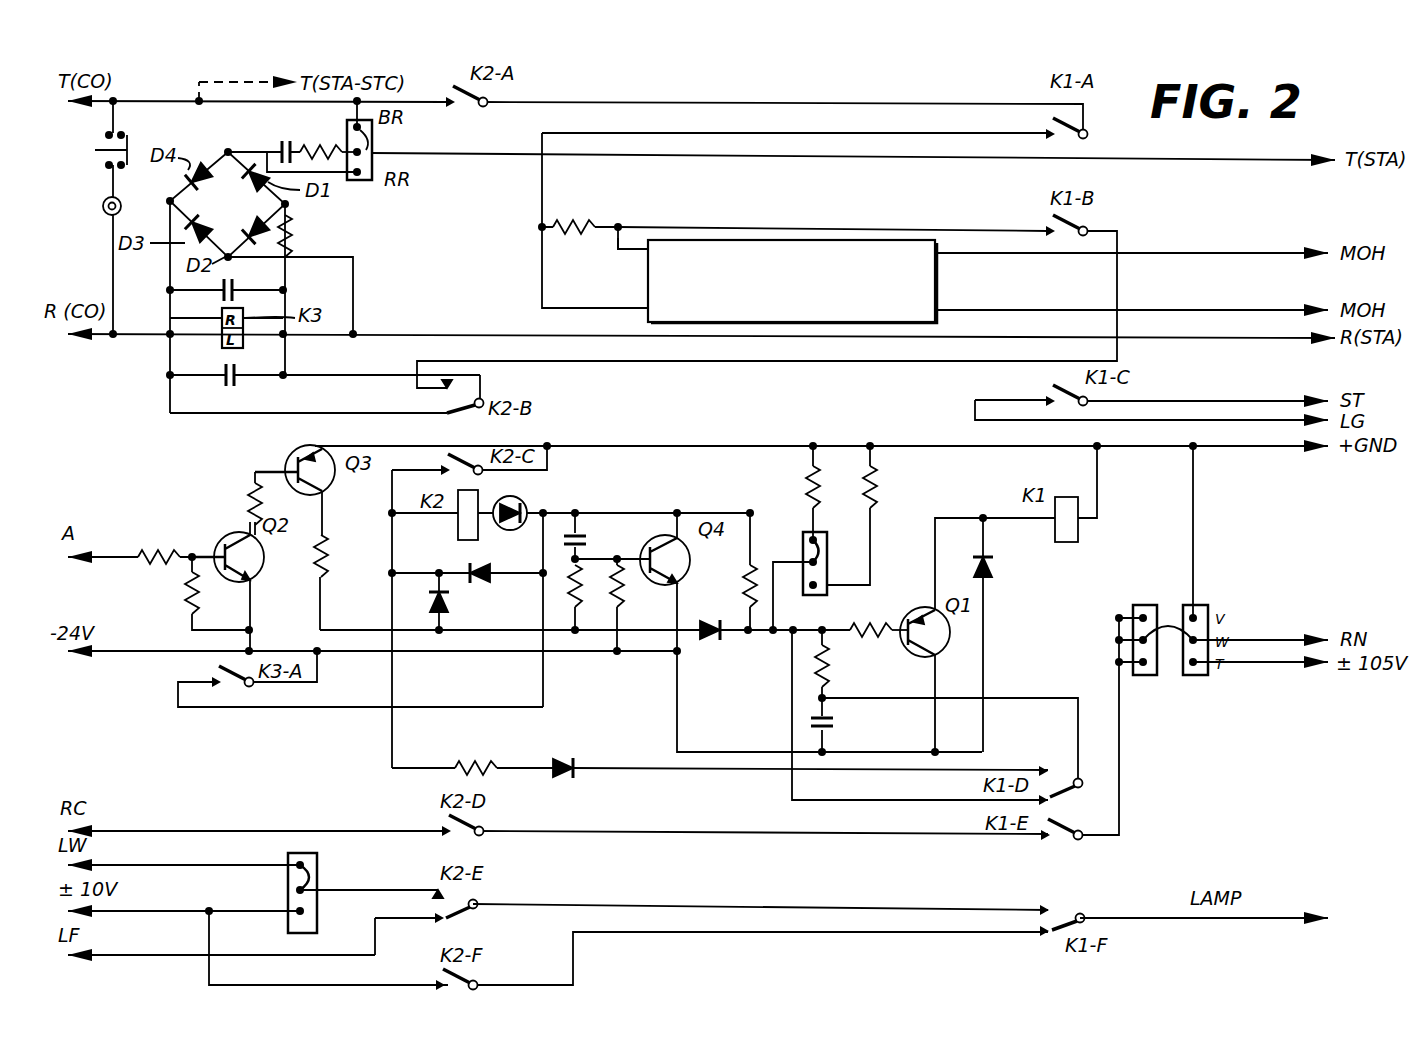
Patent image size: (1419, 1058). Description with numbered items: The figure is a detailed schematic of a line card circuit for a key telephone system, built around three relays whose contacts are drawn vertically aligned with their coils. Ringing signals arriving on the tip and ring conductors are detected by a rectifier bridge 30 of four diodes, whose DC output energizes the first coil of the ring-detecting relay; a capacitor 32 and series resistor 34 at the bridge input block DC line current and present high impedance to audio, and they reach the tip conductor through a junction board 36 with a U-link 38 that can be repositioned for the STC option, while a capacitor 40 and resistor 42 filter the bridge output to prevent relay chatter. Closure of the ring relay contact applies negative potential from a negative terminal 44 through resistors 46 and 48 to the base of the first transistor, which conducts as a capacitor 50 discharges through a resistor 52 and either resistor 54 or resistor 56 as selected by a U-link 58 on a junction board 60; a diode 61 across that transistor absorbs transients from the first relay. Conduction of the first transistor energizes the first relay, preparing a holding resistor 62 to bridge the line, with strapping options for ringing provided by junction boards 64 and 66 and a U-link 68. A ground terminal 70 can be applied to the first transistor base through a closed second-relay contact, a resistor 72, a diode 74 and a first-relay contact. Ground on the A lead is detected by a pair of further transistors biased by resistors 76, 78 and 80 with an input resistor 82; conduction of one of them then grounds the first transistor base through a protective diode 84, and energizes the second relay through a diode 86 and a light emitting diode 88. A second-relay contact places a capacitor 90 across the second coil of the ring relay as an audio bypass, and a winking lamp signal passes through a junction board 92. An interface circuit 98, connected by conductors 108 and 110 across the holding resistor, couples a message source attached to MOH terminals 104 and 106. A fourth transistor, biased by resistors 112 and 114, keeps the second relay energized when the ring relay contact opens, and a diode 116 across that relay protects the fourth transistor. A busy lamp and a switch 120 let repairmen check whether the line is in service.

The rectifier bridge 30 is at (227, 204).
The capacitor 32 is at (282, 140).
The resistor 34 is at (318, 142).
The junction board 36 is at (372, 182).
The U-link 38 is at (375, 140).
The capacitor 40 is at (222, 296).
The resistor 42 is at (292, 232).
The negative terminal 44 is at (140, 655).
The resistor 46 is at (744, 580).
The resistor 48 is at (866, 624).
The capacitor 50 is at (836, 726).
The resistor 52 is at (830, 670).
The resistor 54 is at (806, 478).
The resistor 56 is at (877, 486).
The U-link 58 is at (822, 548).
The junction board 60 is at (806, 538).
The diode 61 is at (996, 566).
The holding resistor 62 is at (575, 218).
The junction board 64 is at (1204, 605).
The junction board 66 is at (1142, 605).
The U-link 68 is at (1172, 630).
The ground terminal 70 is at (1278, 450).
The resistor 72 is at (470, 760).
The diode 74 is at (568, 755).
The biasing resistor 76 is at (246, 480).
The biasing resistor 78 is at (186, 584).
The biasing resistor 80 is at (332, 552).
The input resistor 82 is at (150, 553).
The protective diode 84 is at (708, 644).
The diode 86 is at (452, 604).
The light emitting diode 88 is at (522, 502).
The capacitor 90 is at (234, 386).
The junction board 92 is at (318, 856).
The interface circuit 98 is at (836, 240).
The MOH terminal 104 is at (1216, 240).
The MOH terminal 106 is at (1222, 296).
The conductor 108 is at (618, 246).
The conductor 110 is at (572, 310).
The resistor 112 is at (623, 588).
The resistor 114 is at (586, 572).
The diode 116 is at (466, 562).
The switch 120 is at (94, 160).